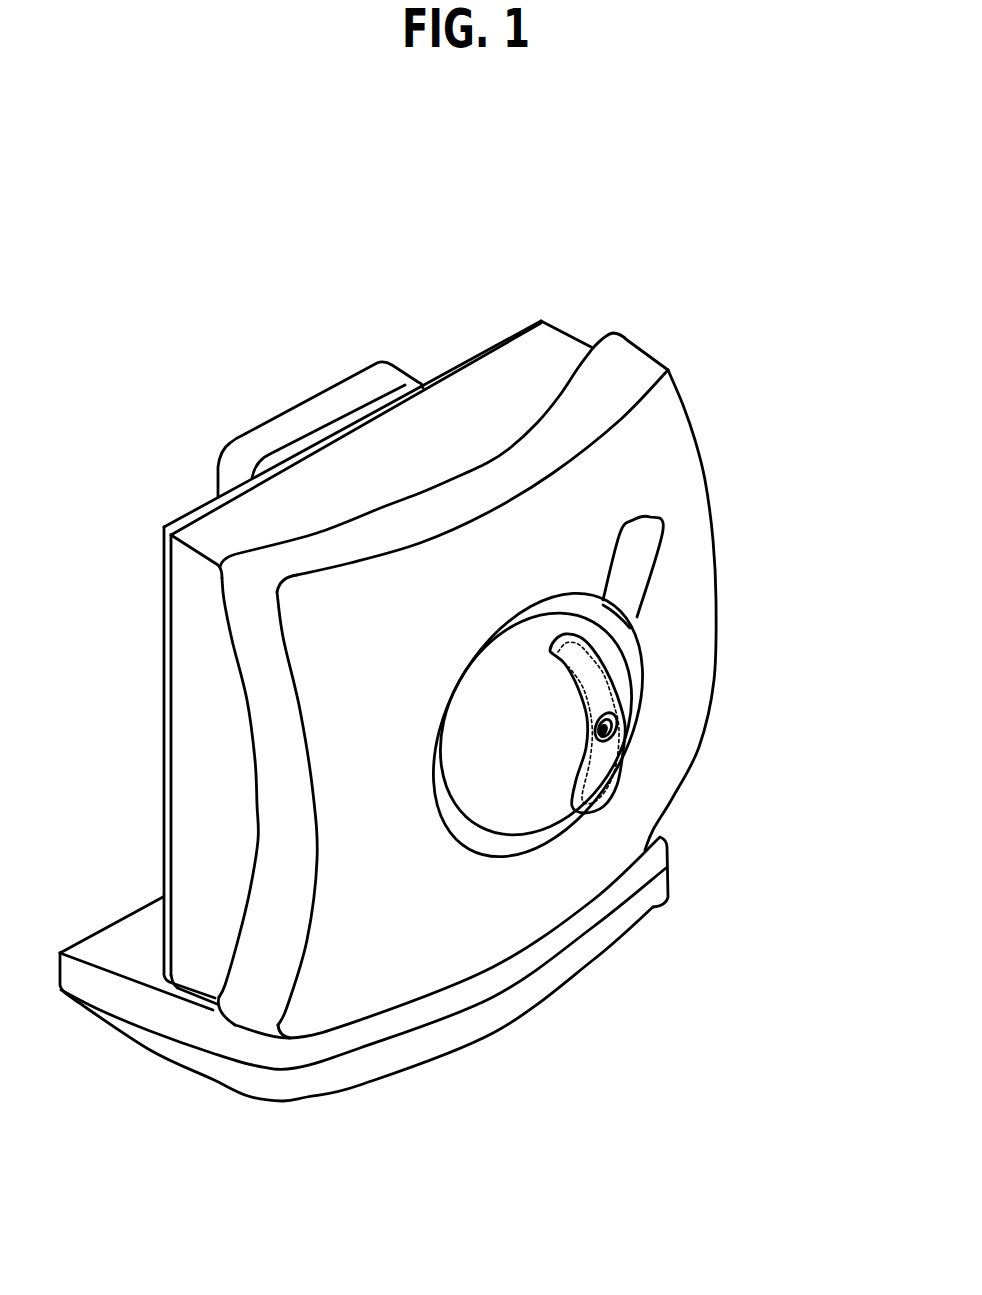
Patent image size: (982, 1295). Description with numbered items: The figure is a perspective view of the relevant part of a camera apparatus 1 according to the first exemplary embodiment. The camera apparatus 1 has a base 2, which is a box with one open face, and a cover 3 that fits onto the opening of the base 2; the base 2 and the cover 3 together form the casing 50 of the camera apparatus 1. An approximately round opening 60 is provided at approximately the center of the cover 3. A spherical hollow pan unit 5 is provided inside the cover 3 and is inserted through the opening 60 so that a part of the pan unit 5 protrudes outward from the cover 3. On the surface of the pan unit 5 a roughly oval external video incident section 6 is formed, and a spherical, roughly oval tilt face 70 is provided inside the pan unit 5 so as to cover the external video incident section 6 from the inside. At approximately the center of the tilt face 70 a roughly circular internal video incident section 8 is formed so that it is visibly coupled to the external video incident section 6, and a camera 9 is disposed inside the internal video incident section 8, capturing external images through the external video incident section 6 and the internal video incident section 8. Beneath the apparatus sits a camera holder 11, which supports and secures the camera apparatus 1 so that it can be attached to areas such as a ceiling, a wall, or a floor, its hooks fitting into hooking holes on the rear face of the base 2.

The camera apparatus 1 is at (653, 288).
The base 2 is at (537, 357).
The cover 3 is at (607, 395).
The pan unit 5 is at (740, 665).
The external video incident section 6 is at (620, 760).
The internal video incident section 8 is at (617, 730).
The camera 9 is at (600, 730).
The camera holder 11 is at (500, 1007).
The casing 50 is at (203, 949).
The opening 60 is at (567, 613).
The tilt face 70 is at (600, 772).